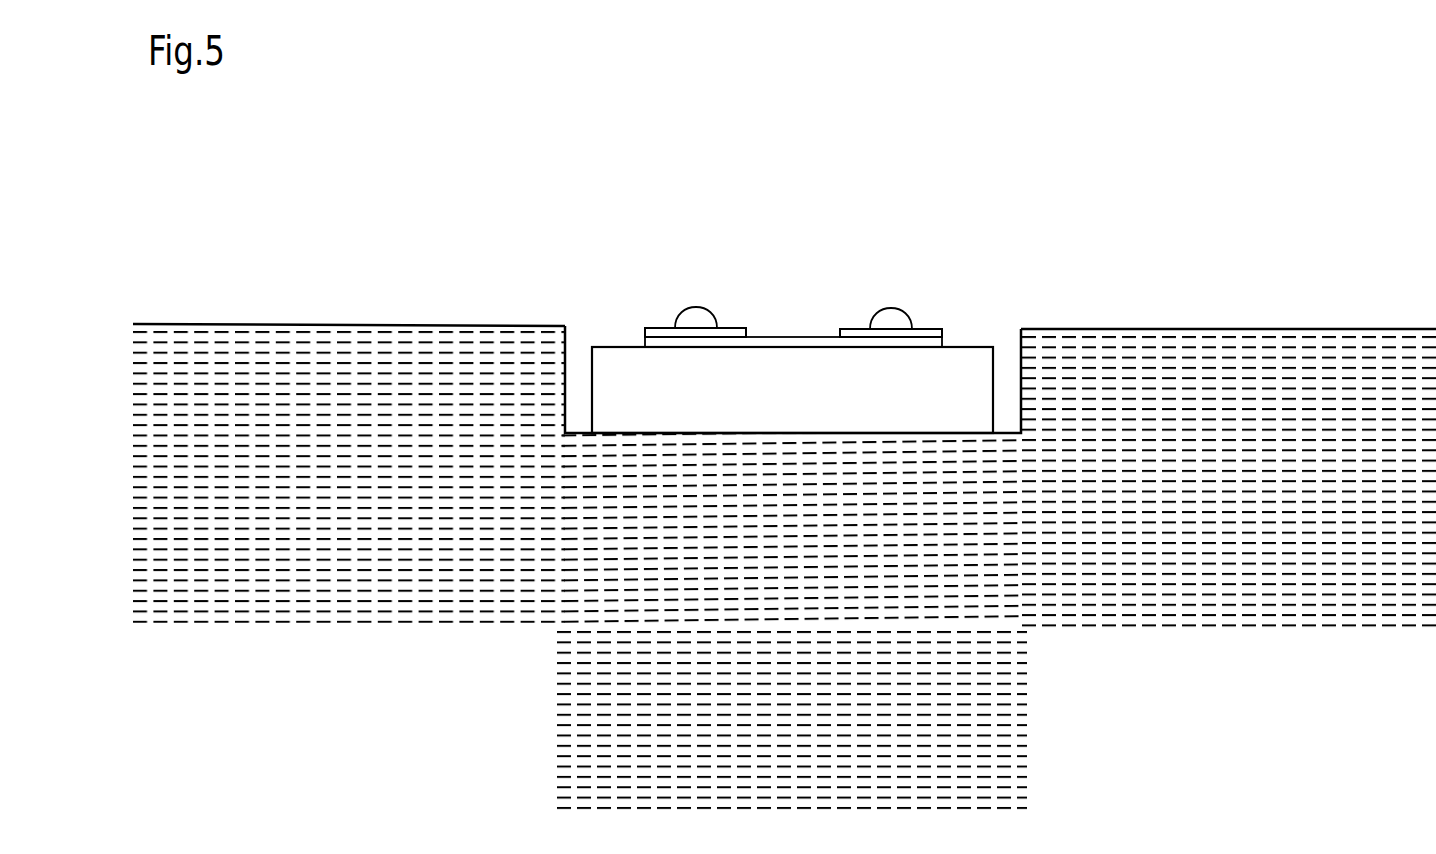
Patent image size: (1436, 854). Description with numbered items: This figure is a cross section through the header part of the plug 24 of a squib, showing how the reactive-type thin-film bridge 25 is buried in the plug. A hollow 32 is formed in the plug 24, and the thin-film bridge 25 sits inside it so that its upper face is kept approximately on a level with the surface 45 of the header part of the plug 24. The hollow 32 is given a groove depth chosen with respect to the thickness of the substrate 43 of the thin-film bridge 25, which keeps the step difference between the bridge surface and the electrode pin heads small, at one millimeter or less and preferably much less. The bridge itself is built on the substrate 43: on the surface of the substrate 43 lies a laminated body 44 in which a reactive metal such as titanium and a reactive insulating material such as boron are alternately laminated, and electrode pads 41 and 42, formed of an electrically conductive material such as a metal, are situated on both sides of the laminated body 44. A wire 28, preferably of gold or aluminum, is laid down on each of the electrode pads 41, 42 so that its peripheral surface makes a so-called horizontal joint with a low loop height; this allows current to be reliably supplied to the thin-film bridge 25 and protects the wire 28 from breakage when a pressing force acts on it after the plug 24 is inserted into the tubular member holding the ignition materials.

The plug 24 is at (784, 488).
The thin-film bridge 25 is at (792, 273).
The wire 28 is at (795, 271).
The hollow 32 is at (1015, 362).
The electrode pad 41 is at (845, 327).
The electrode pad 42 is at (733, 325).
The substrate 43 is at (872, 363).
The laminated body 44 is at (855, 342).
The surface 45 is at (435, 325).